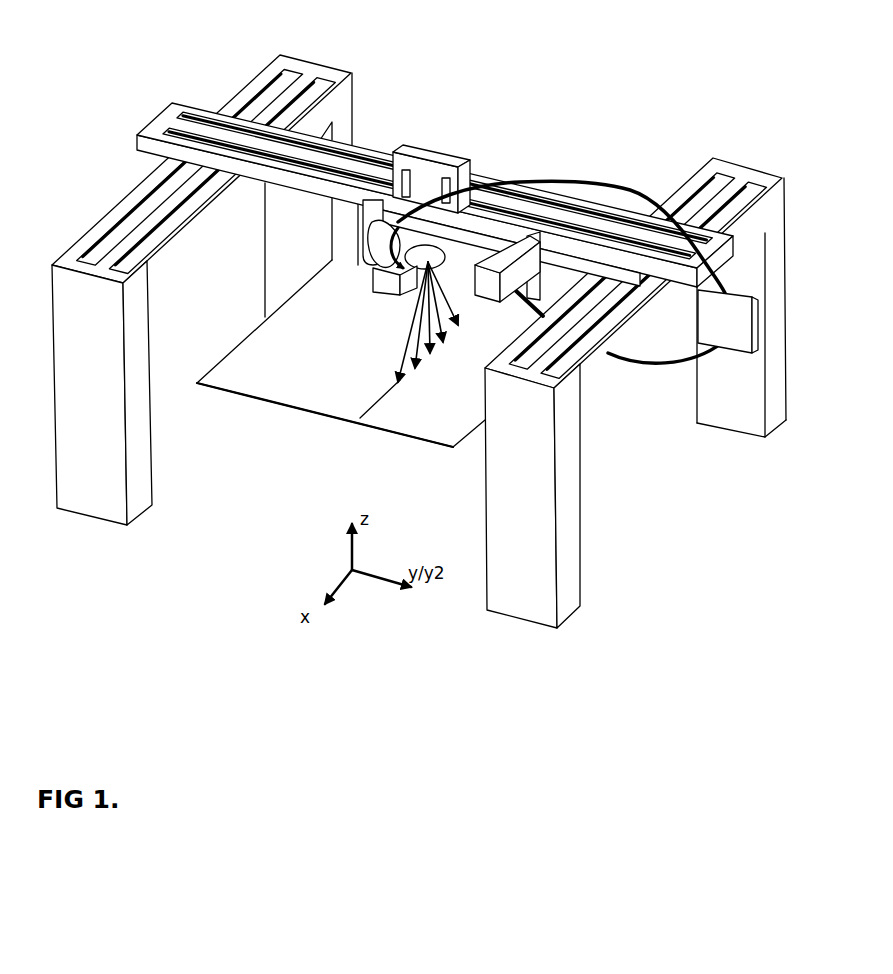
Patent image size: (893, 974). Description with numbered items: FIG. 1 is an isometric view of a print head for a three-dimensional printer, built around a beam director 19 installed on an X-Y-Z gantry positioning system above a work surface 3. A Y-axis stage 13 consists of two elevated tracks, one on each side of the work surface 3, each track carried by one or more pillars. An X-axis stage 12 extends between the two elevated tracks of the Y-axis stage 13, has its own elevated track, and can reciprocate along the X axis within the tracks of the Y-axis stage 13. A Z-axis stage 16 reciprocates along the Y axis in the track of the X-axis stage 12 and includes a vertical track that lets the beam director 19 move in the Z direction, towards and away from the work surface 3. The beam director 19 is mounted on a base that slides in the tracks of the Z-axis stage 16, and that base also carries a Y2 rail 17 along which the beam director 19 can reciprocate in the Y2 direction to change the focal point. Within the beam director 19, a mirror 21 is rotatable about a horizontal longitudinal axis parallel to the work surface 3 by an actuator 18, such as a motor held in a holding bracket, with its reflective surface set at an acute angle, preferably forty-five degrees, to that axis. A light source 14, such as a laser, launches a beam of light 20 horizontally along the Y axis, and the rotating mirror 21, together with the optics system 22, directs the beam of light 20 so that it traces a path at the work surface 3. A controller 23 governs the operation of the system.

The work surface 3 is at (243, 357).
The X-axis stage 12 is at (183, 104).
The Y-axis stage 13 is at (90, 248).
The light source 14 is at (642, 218).
The Z-axis stage 16 is at (428, 178).
The Y2 rail 17 is at (488, 215).
The actuator 18 is at (372, 195).
The beam director 19 is at (373, 283).
The beam of light 20 is at (362, 417).
The mirror 21 is at (528, 236).
The optics system 22 is at (542, 234).
The controller 23 is at (737, 341).